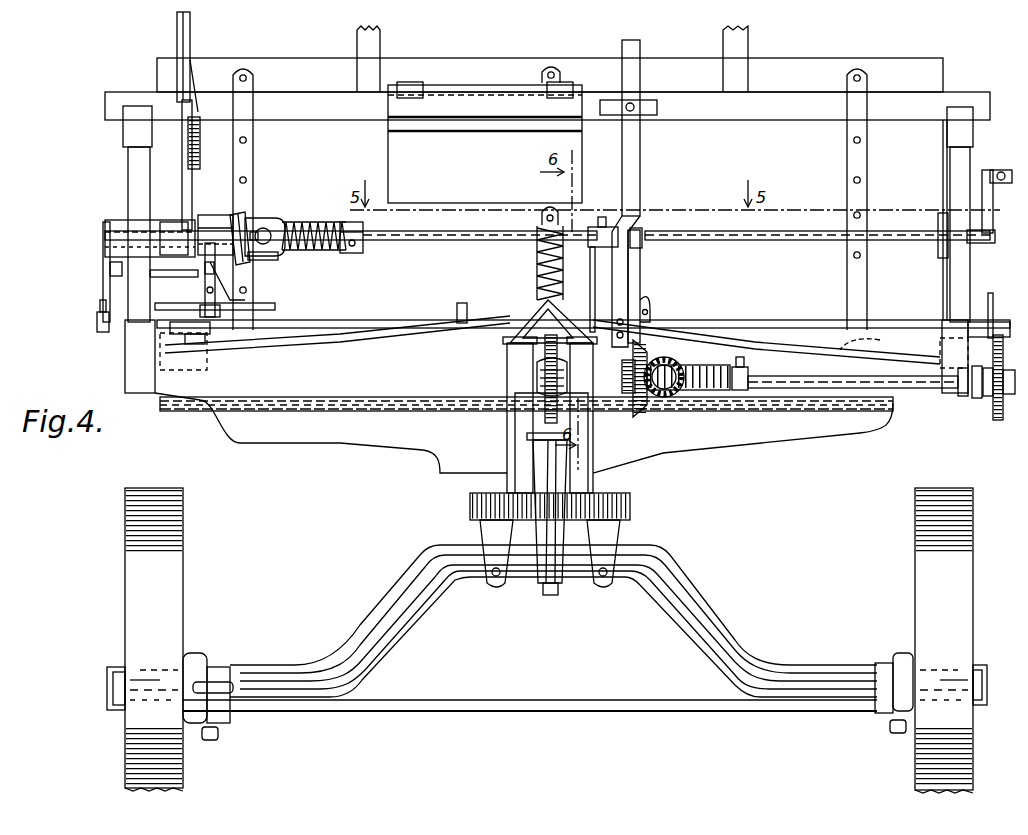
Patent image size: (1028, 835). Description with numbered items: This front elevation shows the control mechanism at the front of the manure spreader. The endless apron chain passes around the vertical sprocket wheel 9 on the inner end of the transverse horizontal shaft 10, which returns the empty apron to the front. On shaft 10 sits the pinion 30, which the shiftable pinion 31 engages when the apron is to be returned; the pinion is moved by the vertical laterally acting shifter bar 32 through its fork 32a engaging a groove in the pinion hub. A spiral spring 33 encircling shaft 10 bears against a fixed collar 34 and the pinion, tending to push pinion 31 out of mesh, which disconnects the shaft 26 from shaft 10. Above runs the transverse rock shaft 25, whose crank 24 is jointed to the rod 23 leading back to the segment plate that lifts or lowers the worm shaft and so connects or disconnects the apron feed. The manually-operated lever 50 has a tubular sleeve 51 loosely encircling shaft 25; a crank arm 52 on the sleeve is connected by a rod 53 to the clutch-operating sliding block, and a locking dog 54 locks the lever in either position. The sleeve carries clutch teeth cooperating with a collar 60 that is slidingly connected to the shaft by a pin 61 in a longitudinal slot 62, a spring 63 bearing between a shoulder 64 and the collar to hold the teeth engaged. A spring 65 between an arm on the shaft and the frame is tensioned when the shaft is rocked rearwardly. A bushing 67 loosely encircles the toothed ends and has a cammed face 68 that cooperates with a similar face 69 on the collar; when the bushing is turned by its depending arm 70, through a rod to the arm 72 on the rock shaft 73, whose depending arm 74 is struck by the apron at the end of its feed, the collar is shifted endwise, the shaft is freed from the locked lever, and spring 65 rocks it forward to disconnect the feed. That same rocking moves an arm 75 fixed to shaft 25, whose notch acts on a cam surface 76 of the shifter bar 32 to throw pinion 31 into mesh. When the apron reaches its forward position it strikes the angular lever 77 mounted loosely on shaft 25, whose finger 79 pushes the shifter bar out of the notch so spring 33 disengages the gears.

The sprocket wheel 9 is at (540, 375).
The transverse horizontal shaft 10 is at (845, 388).
The rod 23 is at (1000, 170).
The crank 24 is at (990, 210).
The rock shaft 25 is at (436, 241).
The shaft 26 is at (770, 241).
The pinion 30 is at (672, 392).
The pinion 31 is at (645, 410).
The shifter bar 32 is at (641, 156).
The fork 32a is at (620, 393).
The spiral spring 33 is at (700, 390).
The collar 34 is at (746, 390).
The manually-operated lever 50 is at (180, 68).
The tubular sleeve 51 is at (170, 230).
The crank arm 52 is at (104, 268).
The rod 53 is at (97, 318).
The locking dog 54 is at (198, 186).
The collar 60 is at (262, 218).
The pin 61 is at (270, 254).
The longitudinal slot 62 is at (270, 230).
The spring 63 is at (306, 228).
The shoulder 64 is at (358, 248).
The spring 65 is at (540, 258).
The bushing 67 is at (214, 224).
The cammed face 68 is at (250, 262).
The cam face 69 is at (246, 212).
The depending arm 70 is at (213, 264).
The arm 72 is at (232, 330).
The rock shaft 73 is at (400, 318).
The depending arm 74 is at (467, 312).
The arm 75 is at (602, 226).
The cam surface 76 is at (644, 232).
The angular lever 77 is at (642, 266).
The finger 79 is at (612, 256).